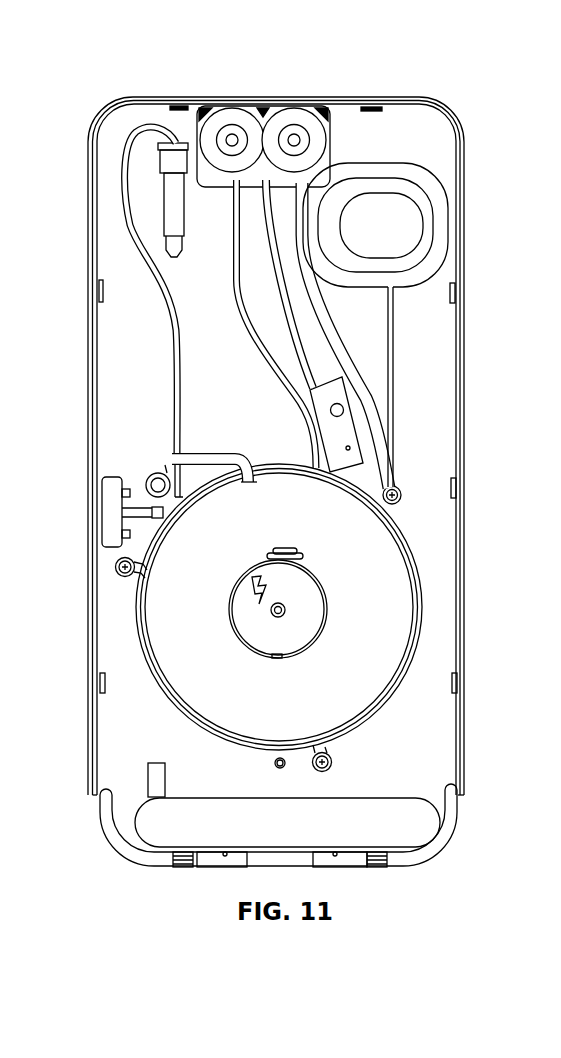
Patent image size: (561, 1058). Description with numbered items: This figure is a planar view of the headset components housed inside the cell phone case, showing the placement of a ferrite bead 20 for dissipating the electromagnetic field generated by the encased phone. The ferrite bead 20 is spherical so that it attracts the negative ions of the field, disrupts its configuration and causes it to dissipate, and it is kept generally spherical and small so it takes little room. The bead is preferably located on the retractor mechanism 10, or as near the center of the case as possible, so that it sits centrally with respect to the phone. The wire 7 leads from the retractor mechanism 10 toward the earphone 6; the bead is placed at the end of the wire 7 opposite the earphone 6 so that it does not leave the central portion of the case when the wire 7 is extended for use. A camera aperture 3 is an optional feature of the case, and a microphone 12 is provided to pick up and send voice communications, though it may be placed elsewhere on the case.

The earphone 6 is at (265, 143).
The camera aperture 3 is at (418, 230).
The wire 7 is at (162, 299).
The microphone 12 is at (352, 430).
The ferrite bead 20 is at (288, 608).
The retractor mechanism 10 is at (383, 642).